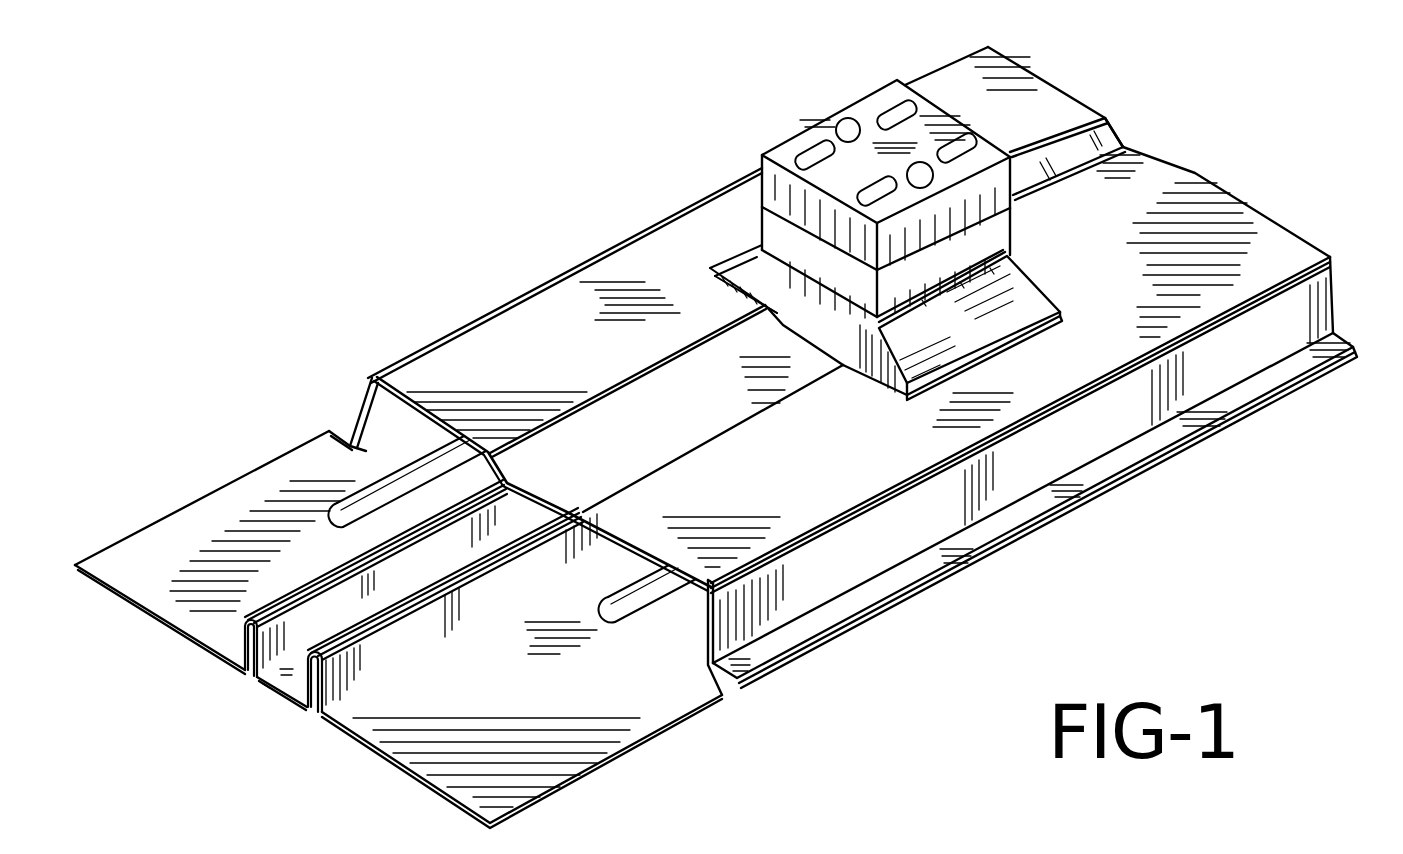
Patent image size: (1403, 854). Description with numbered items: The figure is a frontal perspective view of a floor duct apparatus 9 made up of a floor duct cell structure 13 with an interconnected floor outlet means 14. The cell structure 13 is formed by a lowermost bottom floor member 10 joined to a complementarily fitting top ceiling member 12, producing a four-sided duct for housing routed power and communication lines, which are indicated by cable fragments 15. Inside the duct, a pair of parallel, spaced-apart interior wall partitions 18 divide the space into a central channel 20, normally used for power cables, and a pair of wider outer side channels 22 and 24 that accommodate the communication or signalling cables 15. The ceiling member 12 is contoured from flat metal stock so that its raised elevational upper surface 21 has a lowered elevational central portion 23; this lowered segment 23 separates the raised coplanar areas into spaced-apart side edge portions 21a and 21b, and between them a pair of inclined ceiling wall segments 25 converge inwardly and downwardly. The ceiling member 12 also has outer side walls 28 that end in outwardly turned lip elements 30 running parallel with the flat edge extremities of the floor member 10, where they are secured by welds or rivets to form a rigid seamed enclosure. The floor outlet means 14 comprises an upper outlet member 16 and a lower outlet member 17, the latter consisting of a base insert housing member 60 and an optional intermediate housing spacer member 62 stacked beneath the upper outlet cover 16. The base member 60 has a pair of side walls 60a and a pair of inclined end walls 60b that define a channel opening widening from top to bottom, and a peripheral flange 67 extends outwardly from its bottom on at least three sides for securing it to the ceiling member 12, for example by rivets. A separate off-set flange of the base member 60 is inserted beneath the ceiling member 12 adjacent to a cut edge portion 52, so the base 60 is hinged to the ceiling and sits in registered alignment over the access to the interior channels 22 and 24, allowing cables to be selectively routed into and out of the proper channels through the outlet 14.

The floor duct apparatus 9 is at (1366, 194).
The bottom floor member 10 is at (545, 692).
The top ceiling member 12 is at (752, 501).
The cell structure 13 is at (1208, 453).
The floor outlet means 14 is at (738, 207).
The cable fragments 15 is at (348, 500).
The upper outlet member 16 is at (903, 186).
The lower outlet member 17 is at (1008, 303).
The interior wall partitions 18 is at (425, 620).
The central channel 20 is at (272, 688).
The raised elevational upper surface 21 is at (1295, 253).
The side edge portion 21a is at (1040, 102).
The side edge portion 21b is at (1222, 207).
The outer side channel 22 is at (398, 449).
The lowered elevational central portion 23 is at (1153, 180).
The outer side channel 24 is at (695, 632).
The inclined ceiling wall segments 25 is at (668, 390).
The outer side walls 28 is at (1010, 477).
The lip elements 30 is at (347, 403).
The cut edge portion 52 is at (710, 268).
The base insert housing member 60 is at (945, 322).
The side walls 60a is at (857, 323).
The inclined end walls 60b is at (953, 355).
The intermediate housing spacer member 62 is at (1017, 224).
The peripheral flange 67 is at (887, 373).